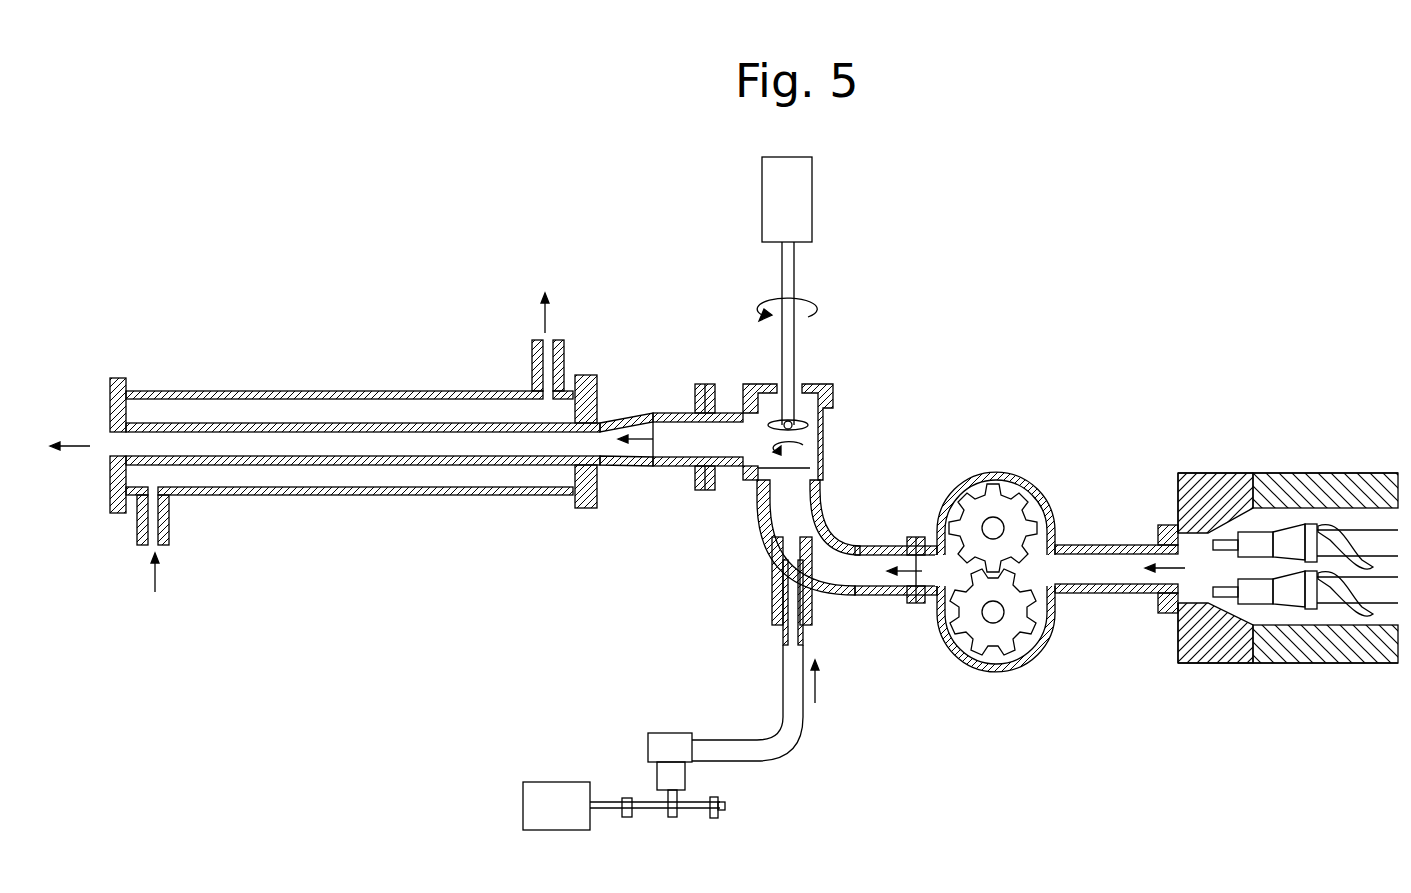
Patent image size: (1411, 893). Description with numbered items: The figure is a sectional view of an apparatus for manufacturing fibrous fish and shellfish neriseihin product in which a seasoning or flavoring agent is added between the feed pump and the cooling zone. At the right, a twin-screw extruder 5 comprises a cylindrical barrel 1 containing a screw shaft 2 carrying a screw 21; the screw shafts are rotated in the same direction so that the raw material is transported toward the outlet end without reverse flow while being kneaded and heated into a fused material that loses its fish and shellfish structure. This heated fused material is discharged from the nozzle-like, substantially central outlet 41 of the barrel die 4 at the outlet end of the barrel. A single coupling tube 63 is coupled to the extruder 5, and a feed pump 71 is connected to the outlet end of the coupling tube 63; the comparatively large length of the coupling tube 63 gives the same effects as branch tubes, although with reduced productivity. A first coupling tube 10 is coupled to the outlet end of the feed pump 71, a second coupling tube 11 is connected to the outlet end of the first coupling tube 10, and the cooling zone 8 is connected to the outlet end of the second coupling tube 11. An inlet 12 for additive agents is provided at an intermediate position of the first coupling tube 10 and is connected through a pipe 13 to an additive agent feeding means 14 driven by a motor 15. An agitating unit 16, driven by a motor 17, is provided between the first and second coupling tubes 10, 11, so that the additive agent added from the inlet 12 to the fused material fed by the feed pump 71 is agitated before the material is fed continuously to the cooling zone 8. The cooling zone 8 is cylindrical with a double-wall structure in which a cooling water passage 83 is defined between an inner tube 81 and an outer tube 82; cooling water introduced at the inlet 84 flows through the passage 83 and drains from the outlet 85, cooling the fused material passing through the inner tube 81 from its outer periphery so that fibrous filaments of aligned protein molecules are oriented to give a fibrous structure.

The cylindrical barrel 1 is at (1348, 475).
The screw shaft 2 is at (1330, 607).
The screw 21 is at (1368, 608).
The barrel die 4 is at (1222, 487).
The twin-screw extruder 5 is at (1290, 468).
The outlet 41 is at (1160, 623).
The coupling tube 63 is at (1095, 562).
The feed pump 71 is at (1015, 478).
The first coupling tube 10 is at (850, 575).
The second coupling tube 11 is at (735, 428).
The inlet of additive agents 12 is at (772, 537).
The pipe 13 is at (782, 716).
The additive agent feeding means 14 is at (660, 780).
The motor 15 is at (557, 787).
The agitating unit 16 is at (810, 457).
The motor 17 is at (798, 197).
The cooling zone 8 is at (333, 383).
The inner tube 81 is at (260, 424).
The outer tube 82 is at (182, 392).
The cooling water passage 83 is at (373, 413).
The inlet 84 is at (153, 520).
The outlet 85 is at (542, 378).